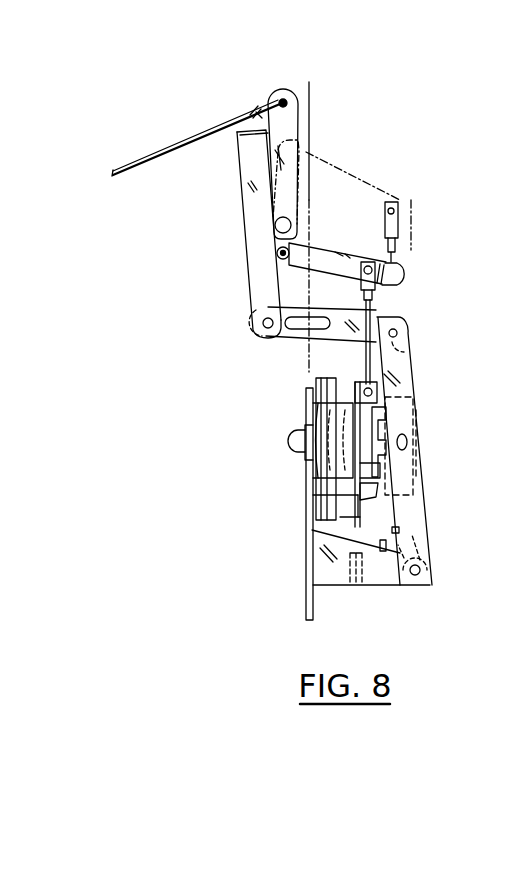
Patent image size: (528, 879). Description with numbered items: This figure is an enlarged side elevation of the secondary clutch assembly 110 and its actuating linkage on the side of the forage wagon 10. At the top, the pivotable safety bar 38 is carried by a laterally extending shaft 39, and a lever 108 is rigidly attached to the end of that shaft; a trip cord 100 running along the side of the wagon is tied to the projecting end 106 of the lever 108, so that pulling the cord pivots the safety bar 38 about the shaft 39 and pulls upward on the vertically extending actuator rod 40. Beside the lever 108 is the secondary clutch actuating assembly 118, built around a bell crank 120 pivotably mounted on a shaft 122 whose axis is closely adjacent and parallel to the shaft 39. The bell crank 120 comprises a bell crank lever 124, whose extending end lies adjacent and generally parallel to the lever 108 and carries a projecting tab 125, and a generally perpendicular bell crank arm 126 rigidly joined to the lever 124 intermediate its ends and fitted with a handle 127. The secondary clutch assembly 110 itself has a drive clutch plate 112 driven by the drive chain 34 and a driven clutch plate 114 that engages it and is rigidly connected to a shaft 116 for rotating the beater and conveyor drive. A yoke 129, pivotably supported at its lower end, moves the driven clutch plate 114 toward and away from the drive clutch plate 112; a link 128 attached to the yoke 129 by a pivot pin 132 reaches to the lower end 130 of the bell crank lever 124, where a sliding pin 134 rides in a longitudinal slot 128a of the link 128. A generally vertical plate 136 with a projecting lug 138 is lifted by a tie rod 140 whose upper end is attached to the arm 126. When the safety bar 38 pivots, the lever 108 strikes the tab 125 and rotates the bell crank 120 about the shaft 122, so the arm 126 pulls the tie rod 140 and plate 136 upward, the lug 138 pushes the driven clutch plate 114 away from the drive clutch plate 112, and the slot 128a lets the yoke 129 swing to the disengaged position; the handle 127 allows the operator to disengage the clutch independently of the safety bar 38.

The forage wagon 10 is at (310, 83).
The drive chain 34 is at (318, 376).
The safety bar 38 is at (305, 144).
The shaft 39 is at (275, 224).
The actuator rod 40 is at (396, 246).
The trip cord 100 is at (178, 138).
The projecting end 106 is at (283, 97).
The lever 108 is at (298, 116).
The secondary clutch assembly 110 is at (440, 479).
The drive clutch plate 112 is at (366, 426).
The driven clutch plate 114 is at (381, 468).
The shaft 116 is at (296, 441).
The secondary clutch actuating assembly 118 is at (226, 189).
The bell crank 120 is at (248, 273).
The shaft 122 is at (277, 253).
The bell crank lever 124 is at (236, 156).
The projecting tab 125 is at (224, 128).
The bell crank arm 126 is at (352, 240).
The handle 127 is at (405, 271).
The link 128 is at (276, 341).
The slot 128a is at (323, 321).
The yoke 129 is at (410, 363).
The lower end 130 is at (260, 322).
The pivot pin 132 is at (397, 333).
The sliding pin 134 is at (262, 326).
The plate 136 is at (362, 518).
The projecting lug 138 is at (374, 497).
The tie rod 140 is at (373, 303).